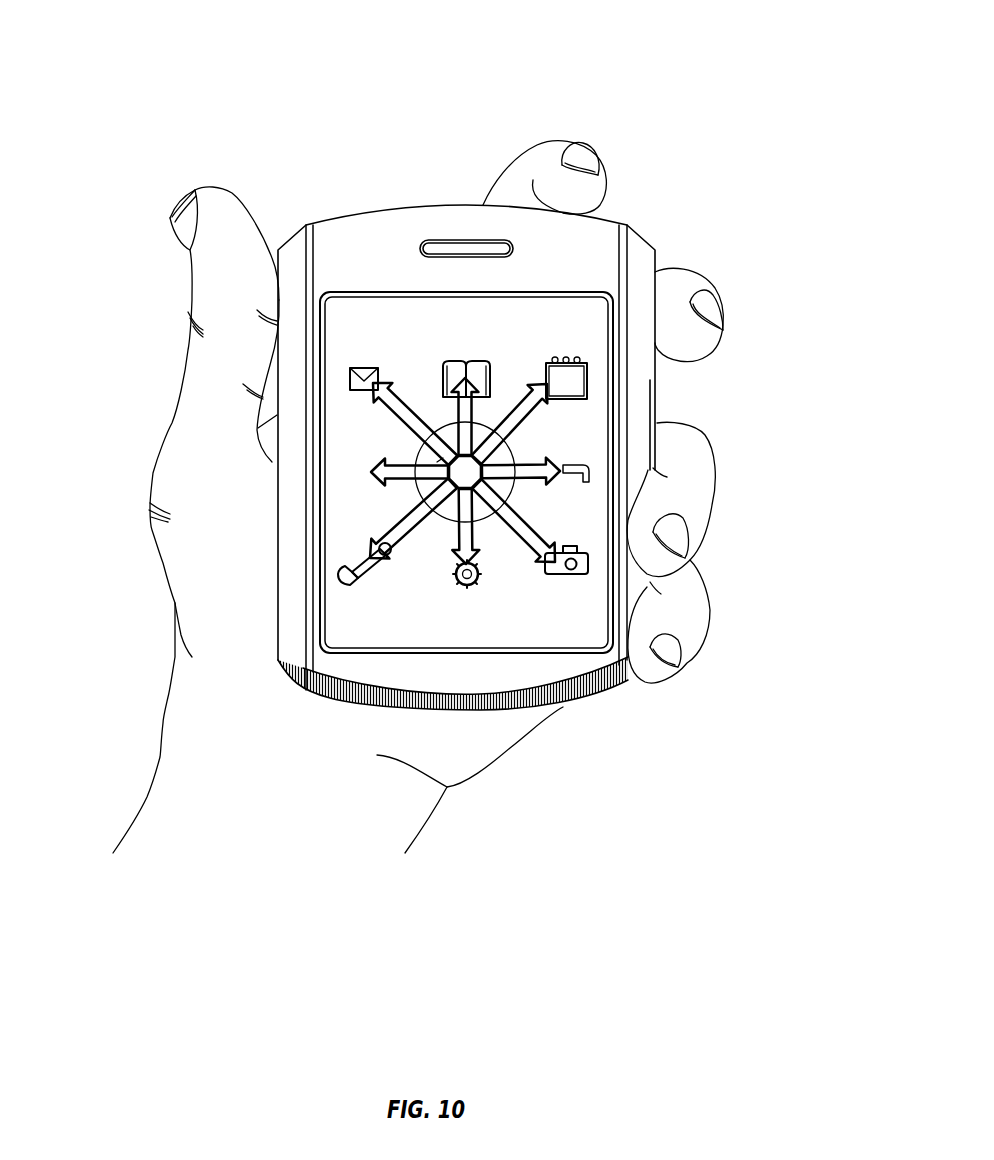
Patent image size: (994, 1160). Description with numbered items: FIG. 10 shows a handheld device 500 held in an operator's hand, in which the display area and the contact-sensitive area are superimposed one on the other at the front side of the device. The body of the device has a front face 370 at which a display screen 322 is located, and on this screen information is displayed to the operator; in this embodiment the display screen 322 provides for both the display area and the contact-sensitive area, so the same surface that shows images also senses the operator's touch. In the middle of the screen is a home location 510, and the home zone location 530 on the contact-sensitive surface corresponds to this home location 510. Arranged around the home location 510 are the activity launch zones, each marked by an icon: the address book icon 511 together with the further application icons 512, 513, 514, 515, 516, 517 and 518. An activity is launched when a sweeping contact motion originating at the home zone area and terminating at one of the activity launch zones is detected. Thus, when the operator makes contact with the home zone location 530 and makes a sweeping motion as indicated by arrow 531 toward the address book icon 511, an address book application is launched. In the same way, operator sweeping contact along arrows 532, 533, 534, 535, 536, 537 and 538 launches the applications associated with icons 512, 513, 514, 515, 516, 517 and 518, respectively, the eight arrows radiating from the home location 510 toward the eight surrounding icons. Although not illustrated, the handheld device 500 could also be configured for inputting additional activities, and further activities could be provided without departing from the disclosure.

The handheld device 500 is at (550, 60).
The front face 370 is at (637, 317).
The display screen 322 is at (403, 327).
The home location 510 is at (443, 458).
The address book icon 511 is at (457, 362).
The application icon 512 is at (587, 385).
The application icon 513 is at (592, 468).
The application icon 514 is at (590, 570).
The application icon 515 is at (470, 588).
The application icon 516 is at (350, 572).
The application icon 517 is at (326, 465).
The application icon 518 is at (350, 375).
The home zone location 530 is at (437, 462).
The arrow 531 is at (443, 370).
The arrow 532 is at (568, 418).
The arrow 533 is at (588, 483).
The arrow 534 is at (565, 530).
The arrow 535 is at (458, 538).
The arrow 536 is at (375, 548).
The arrow 537 is at (372, 483).
The arrow 538 is at (383, 405).